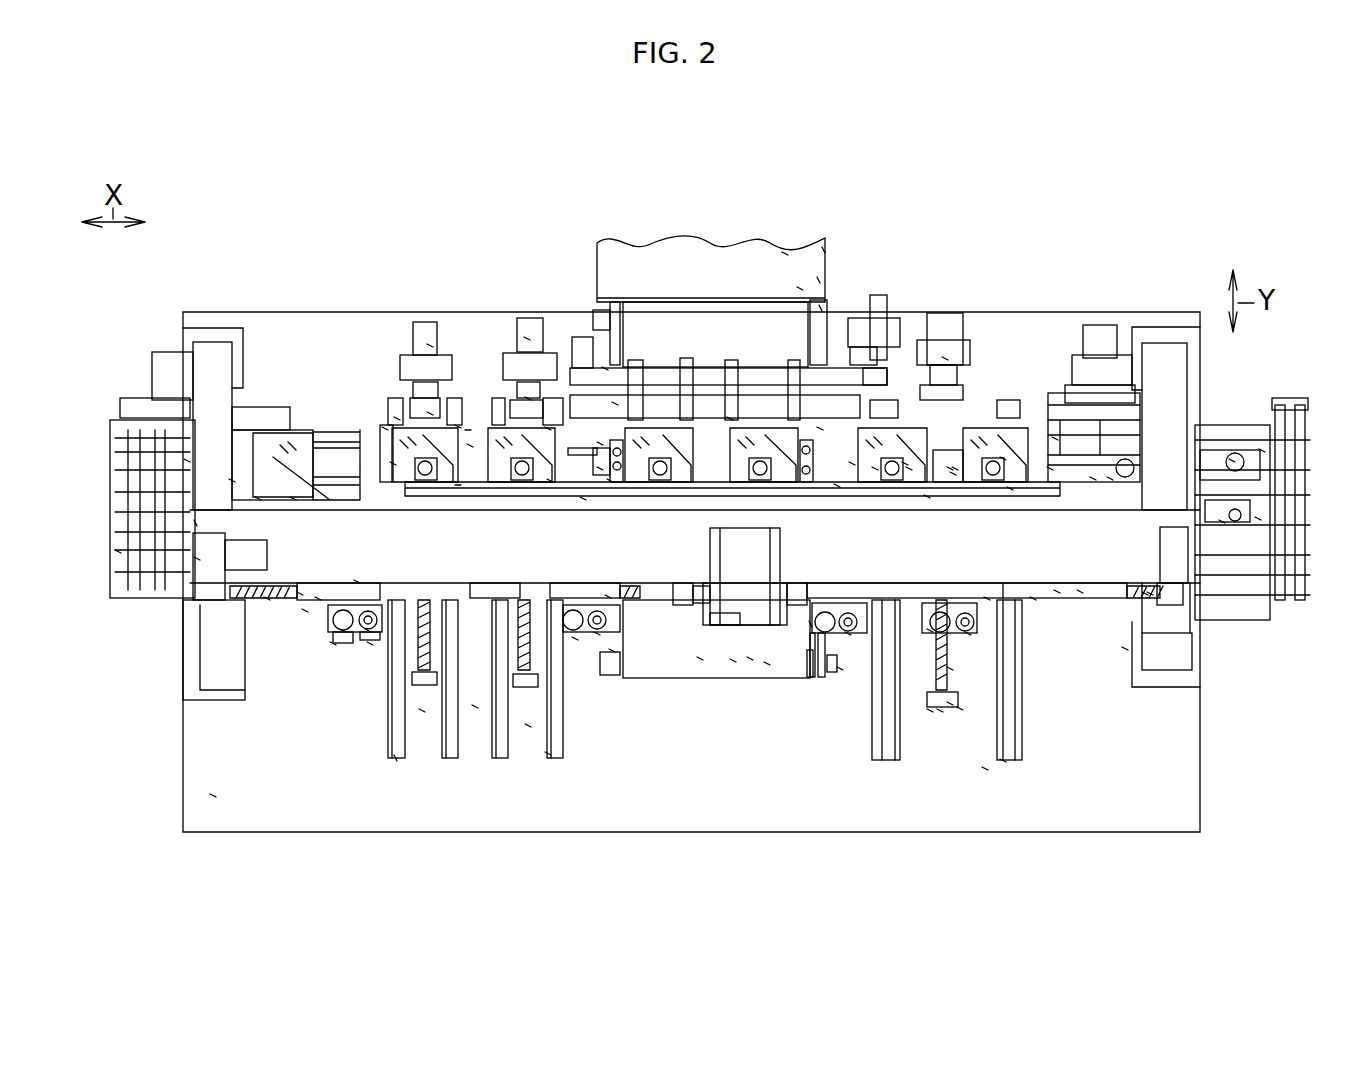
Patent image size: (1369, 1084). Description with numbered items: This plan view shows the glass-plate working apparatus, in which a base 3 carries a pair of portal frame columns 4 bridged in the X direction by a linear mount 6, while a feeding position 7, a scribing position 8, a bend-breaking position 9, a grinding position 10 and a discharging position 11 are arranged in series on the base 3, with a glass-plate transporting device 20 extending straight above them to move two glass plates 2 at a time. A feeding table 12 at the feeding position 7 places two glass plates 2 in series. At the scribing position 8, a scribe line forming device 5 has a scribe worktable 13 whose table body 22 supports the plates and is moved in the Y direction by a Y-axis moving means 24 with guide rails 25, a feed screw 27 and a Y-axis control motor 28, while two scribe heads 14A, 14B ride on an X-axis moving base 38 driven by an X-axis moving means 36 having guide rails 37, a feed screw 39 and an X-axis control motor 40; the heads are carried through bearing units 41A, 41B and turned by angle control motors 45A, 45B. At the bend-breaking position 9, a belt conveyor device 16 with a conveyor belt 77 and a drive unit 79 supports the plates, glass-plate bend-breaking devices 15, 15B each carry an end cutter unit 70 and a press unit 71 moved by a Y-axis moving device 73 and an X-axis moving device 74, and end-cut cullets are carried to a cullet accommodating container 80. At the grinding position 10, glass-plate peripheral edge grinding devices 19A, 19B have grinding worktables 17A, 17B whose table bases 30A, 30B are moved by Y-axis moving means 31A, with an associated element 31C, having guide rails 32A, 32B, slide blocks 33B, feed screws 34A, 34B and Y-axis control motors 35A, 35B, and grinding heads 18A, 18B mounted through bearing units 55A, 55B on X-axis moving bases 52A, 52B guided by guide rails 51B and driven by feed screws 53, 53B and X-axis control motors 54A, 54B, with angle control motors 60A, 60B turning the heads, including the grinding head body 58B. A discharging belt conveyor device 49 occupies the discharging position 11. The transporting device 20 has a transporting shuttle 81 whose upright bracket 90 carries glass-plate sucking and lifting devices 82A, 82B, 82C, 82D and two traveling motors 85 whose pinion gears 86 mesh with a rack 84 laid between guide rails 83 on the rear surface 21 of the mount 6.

The glass plate 2 is at (1093, 480).
The base 3 is at (213, 797).
The portal frame column 4 is at (212, 352).
The scribe line forming device 5 is at (357, 583).
The linear mount 6 is at (1055, 440).
The feeding position 7 is at (1258, 520).
The scribing position 8 is at (968, 635).
The bend-breaking position 9 is at (812, 624).
The grinding position 10 is at (475, 708).
The discharging position 11 is at (187, 462).
The feeding table 12 is at (1262, 452).
The scribe worktable 13 is at (950, 470).
The scribe head 14A is at (987, 600).
The scribe head 14B is at (930, 632).
The rail 15 is at (820, 430).
The glass-plate bend-breaking device 15B is at (600, 470).
The belt conveyor device 16 is at (750, 660).
The grinding worktable 17A is at (470, 447).
The grinding worktable 17B is at (385, 430).
The grinding head 18A is at (597, 635).
The grinding head 18B is at (333, 645).
The glass-plate peripheral edge grinding device 19A is at (548, 755).
The glass-plate peripheral edge grinding device 19B is at (422, 710).
The glass-plate transporting device 20 is at (1110, 480).
The rear surface 21 is at (232, 482).
The table body 22 is at (905, 465).
The Y-axis moving means 24 is at (1003, 762).
The guide rail 25 is at (1003, 460).
The feed screw 27 is at (945, 360).
The Y-axis control motor 28 is at (909, 470).
The table base 30A is at (527, 340).
The table base 30B is at (468, 430).
The Y-axis moving means 31A is at (605, 370).
The plate 31C is at (430, 347).
The guide rail 32A is at (550, 482).
The guide rail 32B is at (458, 485).
The slide block 33B is at (397, 420).
The feed screw 34A is at (528, 400).
The feed screw 34B is at (430, 415).
The Y-axis control motor 35A is at (548, 430).
The Y-axis control motor 35B is at (458, 428).
The X-axis moving means 36 is at (1057, 593).
The guide rail 37 is at (1125, 650).
The X-axis moving base 38 is at (1080, 593).
The feed screw 39 is at (1150, 595).
The X-axis control motor 40 is at (1145, 595).
The bearing unit 41A is at (1033, 600).
The bearing unit 41B is at (950, 670).
The angle control motor 45A is at (950, 705).
The angle control motor 45B is at (848, 635).
The discharging belt conveyor device 49 is at (118, 553).
The guide rail 51B is at (318, 600).
The X-axis moving base 52A is at (700, 660).
The X-axis moving base 52B is at (300, 595).
The plate 53 is at (733, 662).
The feed screw 53B is at (267, 600).
The X-axis control motor 54A is at (767, 665).
The X-axis control motor 54B is at (197, 560).
The bearing unit 55A is at (612, 652).
The bearing unit 55B is at (343, 632).
The grinding head body 58B is at (368, 632).
The angle control motor 60A is at (608, 598).
The angle control motor 60B is at (305, 612).
The end cutter unit 70 is at (730, 420).
The press unit 71 is at (822, 308).
The Y-axis moving device 73 is at (600, 445).
The X-axis moving device 74 is at (615, 405).
The conveyor belt 77 is at (840, 670).
The drive unit 79 is at (852, 465).
The cullet accommodating container 80 is at (785, 255).
The transporting shuttle 81 is at (1050, 470).
The glass-plate sucking and lifting device 82A is at (1232, 462).
The glass-plate sucking and lifting device 82B is at (955, 470).
The glass-plate sucking and lifting device 82C is at (800, 290).
The glass-plate sucking and lifting device 82D is at (393, 465).
The guide rail 83 is at (293, 500).
The rack 84 is at (258, 500).
The traveling motor 85 is at (610, 482).
The pinion gear 86 is at (583, 500).
The bracket 90 is at (1010, 490).